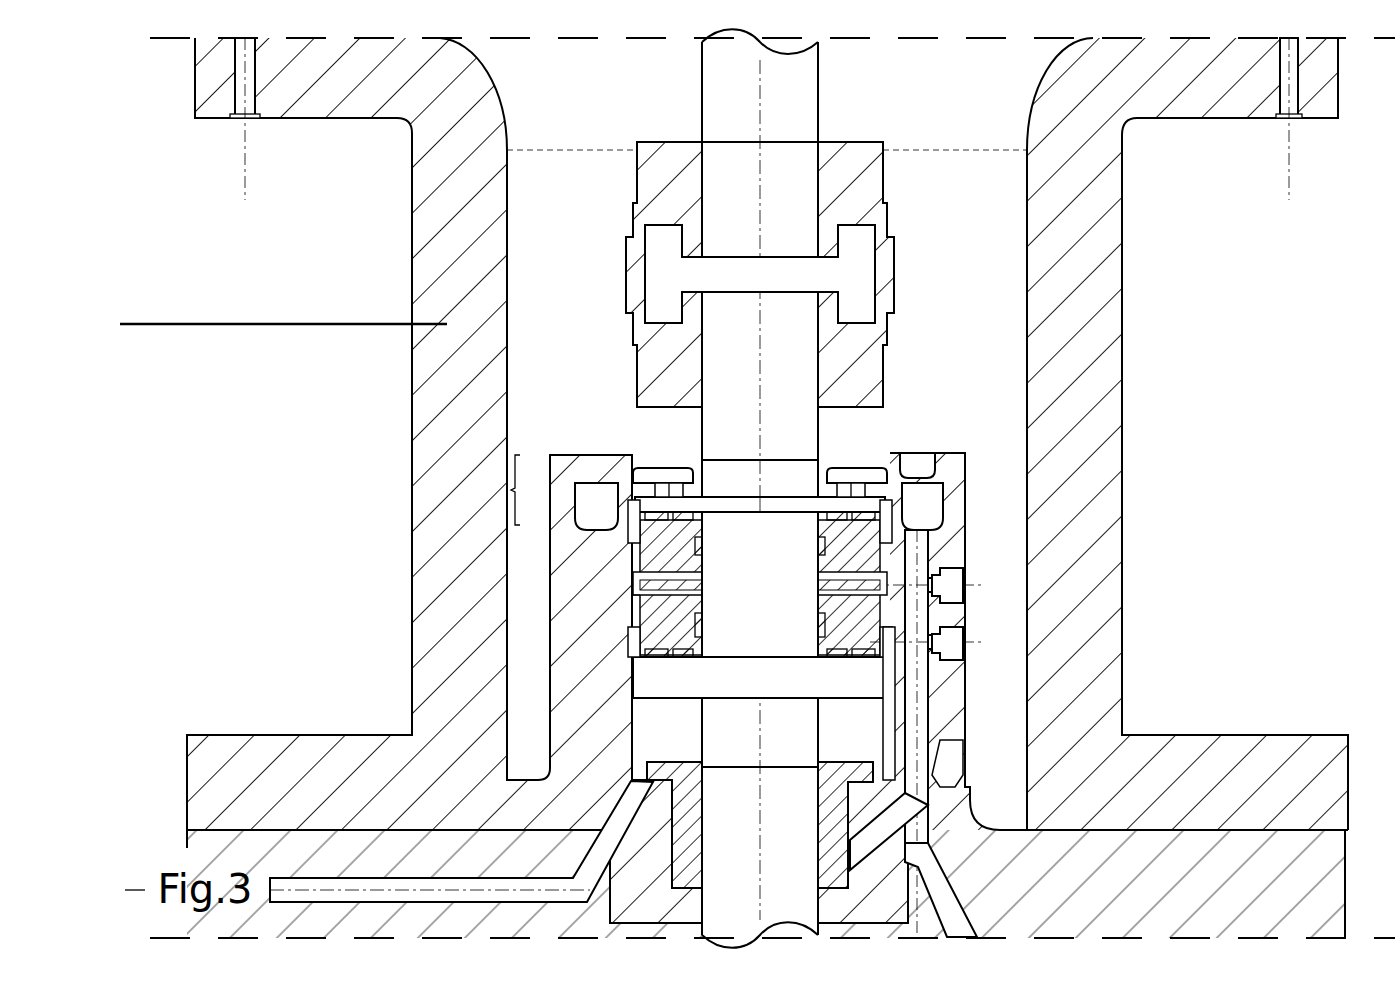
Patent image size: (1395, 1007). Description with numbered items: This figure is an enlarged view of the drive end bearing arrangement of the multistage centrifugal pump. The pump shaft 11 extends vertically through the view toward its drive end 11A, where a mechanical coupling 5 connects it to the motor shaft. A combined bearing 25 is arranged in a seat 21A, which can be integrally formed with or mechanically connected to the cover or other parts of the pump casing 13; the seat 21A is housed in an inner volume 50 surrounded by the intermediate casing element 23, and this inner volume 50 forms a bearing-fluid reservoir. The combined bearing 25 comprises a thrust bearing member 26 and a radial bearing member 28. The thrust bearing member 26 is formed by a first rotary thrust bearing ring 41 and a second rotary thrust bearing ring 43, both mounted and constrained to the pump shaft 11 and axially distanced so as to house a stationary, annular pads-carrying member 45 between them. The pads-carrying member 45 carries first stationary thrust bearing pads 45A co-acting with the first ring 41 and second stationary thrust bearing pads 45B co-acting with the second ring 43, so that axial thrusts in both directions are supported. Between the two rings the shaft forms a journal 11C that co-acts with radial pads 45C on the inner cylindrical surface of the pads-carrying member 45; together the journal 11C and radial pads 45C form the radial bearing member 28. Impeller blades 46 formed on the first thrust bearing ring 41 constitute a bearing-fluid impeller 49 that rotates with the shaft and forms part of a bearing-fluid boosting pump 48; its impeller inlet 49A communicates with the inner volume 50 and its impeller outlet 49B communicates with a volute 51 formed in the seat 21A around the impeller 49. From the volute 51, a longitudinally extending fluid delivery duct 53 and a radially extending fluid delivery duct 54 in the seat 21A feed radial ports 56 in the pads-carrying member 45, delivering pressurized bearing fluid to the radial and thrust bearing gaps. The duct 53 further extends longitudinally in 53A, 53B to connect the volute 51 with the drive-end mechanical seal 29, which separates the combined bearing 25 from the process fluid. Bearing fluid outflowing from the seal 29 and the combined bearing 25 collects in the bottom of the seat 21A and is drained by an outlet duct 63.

The mechanical coupling 5 is at (915, 282).
The pump shaft 11 is at (720, 803).
The first end (drive end) 11A is at (717, 410).
The journal 11C is at (771, 550).
The pump casing 13 is at (1352, 870).
The seat 21A is at (565, 545).
The intermediate casing element 23 is at (1095, 342).
The combined bearing 25 is at (902, 434).
The thrust bearing member 26 is at (788, 493).
The radial bearing member 28 is at (630, 602).
The drive-end mechanical seal 29 is at (833, 782).
The first rotary thrust bearing ring 41 is at (872, 503).
The second rotary thrust bearing ring 43 is at (657, 675).
The stationary annular pads-carrying member 45 is at (662, 613).
The first stationary thrust bearing pads 45A is at (683, 510).
The second stationary thrust bearing pads 45B is at (683, 660).
The radial pads 45C is at (702, 548).
The impeller blades 46 is at (664, 492).
The bearing-fluid boosting pump 48 is at (497, 490).
The bearing-fluid impeller 49 is at (887, 467).
The impeller inlet 49A is at (866, 480).
The impeller outlet 49B is at (617, 490).
The inner volume 50 is at (972, 333).
The volute 51 is at (930, 518).
The longitudinally extending fluid delivery duct 53 is at (922, 557).
The longitudinal duct extension 53A is at (923, 728).
The longitudinal duct extension 53B is at (878, 848).
The radially extending fluid delivery duct 54 is at (935, 590).
The radial ports 56 is at (663, 582).
The outlet duct 63 is at (378, 886).